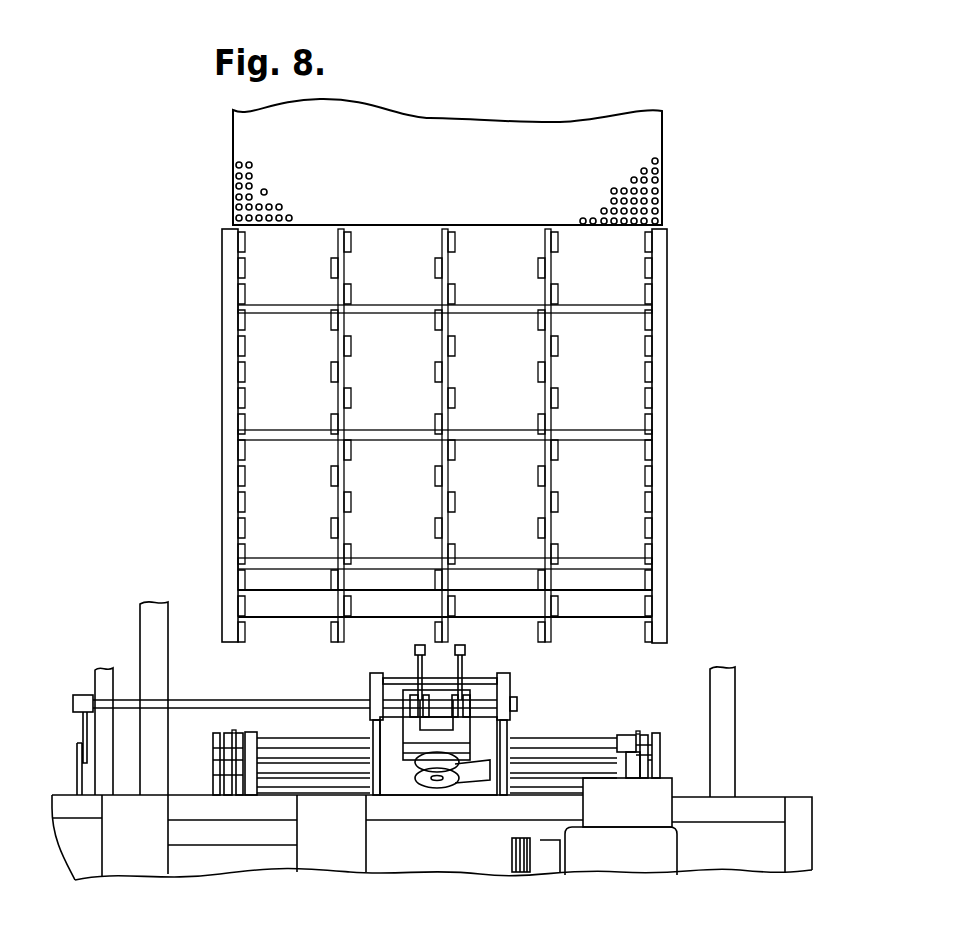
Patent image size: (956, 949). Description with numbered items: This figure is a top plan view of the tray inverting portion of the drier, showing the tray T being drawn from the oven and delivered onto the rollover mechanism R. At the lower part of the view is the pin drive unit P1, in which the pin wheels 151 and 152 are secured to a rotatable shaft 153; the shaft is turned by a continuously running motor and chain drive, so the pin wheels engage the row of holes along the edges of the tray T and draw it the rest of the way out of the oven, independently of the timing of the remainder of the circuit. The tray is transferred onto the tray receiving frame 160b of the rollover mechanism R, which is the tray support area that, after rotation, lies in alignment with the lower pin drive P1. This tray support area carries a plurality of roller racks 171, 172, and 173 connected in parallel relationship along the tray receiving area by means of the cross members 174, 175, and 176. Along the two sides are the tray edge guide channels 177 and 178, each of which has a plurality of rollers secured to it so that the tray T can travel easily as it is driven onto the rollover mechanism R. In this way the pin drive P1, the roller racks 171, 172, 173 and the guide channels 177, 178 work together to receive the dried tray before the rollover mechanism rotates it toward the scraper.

The tray T is at (500, 128).
The rollover mechanism R is at (438, 436).
The tray receiving frame 160b is at (196, 435).
The tray edge guide channel 178 is at (221, 357).
The tray edge guide channel 177 is at (660, 368).
The roller rack 173 is at (338, 396).
The roller rack 172 is at (441, 393).
The roller rack 171 is at (544, 396).
The cross member 176 is at (594, 308).
The cross member 175 is at (596, 438).
The cross member 174 is at (596, 564).
The pin wheel 152 is at (247, 732).
The rotatable shaft 153 is at (541, 740).
The pin wheel 151 is at (629, 735).
The pin drive unit P1 is at (231, 724).